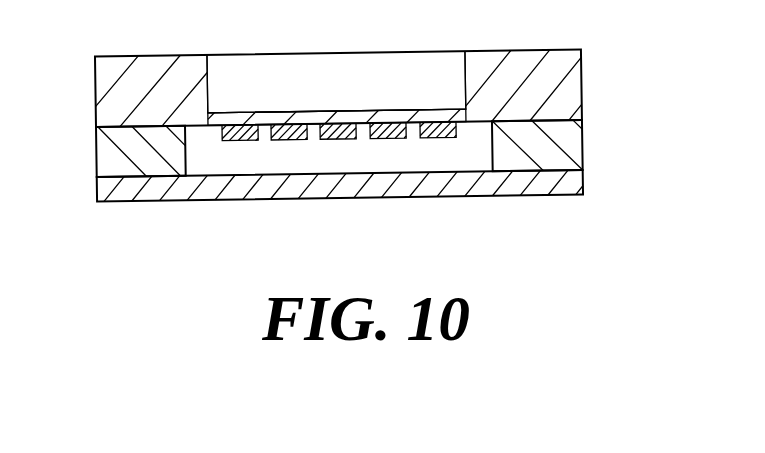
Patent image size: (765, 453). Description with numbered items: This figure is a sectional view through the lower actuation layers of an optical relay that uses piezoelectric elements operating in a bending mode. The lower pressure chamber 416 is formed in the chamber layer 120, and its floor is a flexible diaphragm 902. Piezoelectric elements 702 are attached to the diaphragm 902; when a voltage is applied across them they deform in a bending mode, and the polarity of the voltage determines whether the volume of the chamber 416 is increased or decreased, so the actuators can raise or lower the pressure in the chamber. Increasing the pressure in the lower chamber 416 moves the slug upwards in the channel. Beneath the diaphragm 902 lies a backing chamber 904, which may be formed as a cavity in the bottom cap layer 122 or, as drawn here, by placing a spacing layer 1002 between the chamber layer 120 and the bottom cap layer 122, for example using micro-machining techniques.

The chamber layer 120 is at (583, 78).
The bottom cap layer 122 is at (583, 178).
The chamber 416 is at (445, 77).
The piezoelectric elements 702 is at (240, 138).
The flexible diaphragm 902 is at (307, 110).
The backing chamber 904 is at (207, 155).
The spacing layer 1002 is at (583, 152).